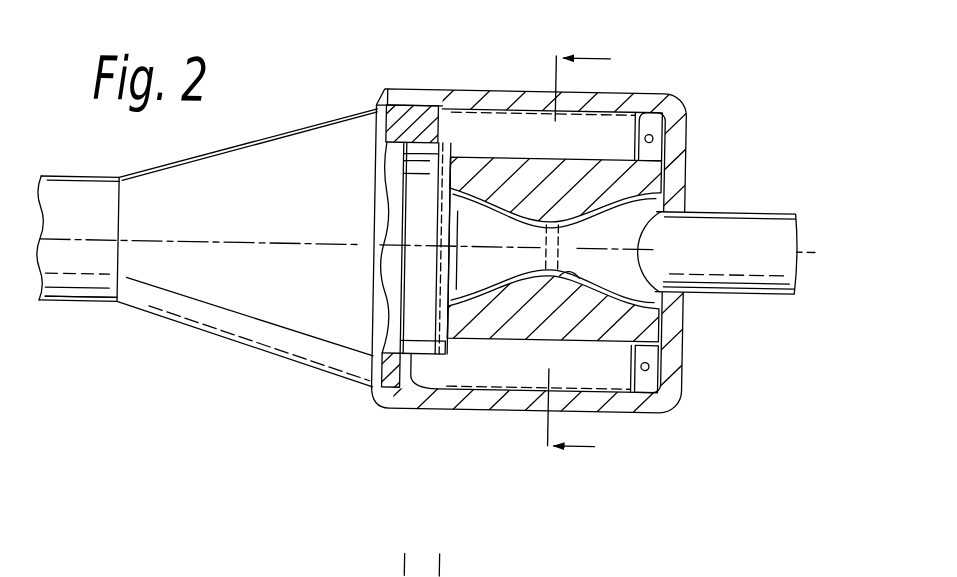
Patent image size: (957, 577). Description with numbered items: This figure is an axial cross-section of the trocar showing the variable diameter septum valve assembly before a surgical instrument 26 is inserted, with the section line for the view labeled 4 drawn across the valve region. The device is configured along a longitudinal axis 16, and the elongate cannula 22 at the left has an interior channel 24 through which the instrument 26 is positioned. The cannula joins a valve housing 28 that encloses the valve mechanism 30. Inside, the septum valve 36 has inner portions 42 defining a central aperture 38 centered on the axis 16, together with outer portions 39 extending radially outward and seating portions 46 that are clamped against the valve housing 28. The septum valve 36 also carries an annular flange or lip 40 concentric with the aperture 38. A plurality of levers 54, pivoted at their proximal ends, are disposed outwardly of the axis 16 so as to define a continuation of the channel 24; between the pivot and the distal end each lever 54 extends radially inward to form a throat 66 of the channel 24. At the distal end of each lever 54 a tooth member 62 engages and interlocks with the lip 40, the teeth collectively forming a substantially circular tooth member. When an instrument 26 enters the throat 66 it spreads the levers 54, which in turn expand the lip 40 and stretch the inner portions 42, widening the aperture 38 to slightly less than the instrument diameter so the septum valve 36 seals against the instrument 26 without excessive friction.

The longitudinal axis 16 is at (96, 246).
The cannula 22 is at (100, 309).
The septum valve 36 is at (395, 108).
The seating portions 46 is at (405, 128).
The tooth member 62 is at (435, 181).
The inner portions 42 is at (435, 228).
The outer portions 39 is at (420, 302).
The valve housing 28 is at (426, 91).
The annular flange or lip 40 is at (489, 145).
The valve mechanism 30 is at (503, 95).
The levers 54 is at (598, 176).
The throat 66 is at (575, 272).
The central orifice or aperture 38 is at (450, 252).
The channel 24 is at (617, 276).
The surgical instrument 26 is at (772, 222).
The section line 4- 4 is at (559, 255).